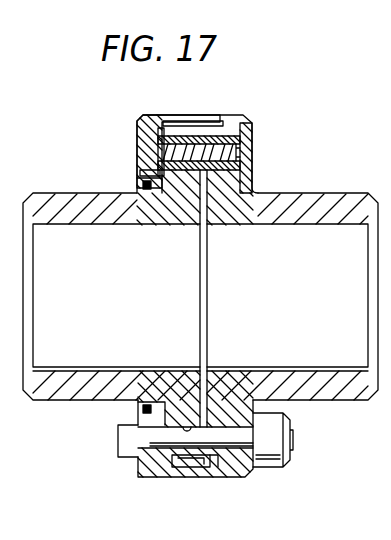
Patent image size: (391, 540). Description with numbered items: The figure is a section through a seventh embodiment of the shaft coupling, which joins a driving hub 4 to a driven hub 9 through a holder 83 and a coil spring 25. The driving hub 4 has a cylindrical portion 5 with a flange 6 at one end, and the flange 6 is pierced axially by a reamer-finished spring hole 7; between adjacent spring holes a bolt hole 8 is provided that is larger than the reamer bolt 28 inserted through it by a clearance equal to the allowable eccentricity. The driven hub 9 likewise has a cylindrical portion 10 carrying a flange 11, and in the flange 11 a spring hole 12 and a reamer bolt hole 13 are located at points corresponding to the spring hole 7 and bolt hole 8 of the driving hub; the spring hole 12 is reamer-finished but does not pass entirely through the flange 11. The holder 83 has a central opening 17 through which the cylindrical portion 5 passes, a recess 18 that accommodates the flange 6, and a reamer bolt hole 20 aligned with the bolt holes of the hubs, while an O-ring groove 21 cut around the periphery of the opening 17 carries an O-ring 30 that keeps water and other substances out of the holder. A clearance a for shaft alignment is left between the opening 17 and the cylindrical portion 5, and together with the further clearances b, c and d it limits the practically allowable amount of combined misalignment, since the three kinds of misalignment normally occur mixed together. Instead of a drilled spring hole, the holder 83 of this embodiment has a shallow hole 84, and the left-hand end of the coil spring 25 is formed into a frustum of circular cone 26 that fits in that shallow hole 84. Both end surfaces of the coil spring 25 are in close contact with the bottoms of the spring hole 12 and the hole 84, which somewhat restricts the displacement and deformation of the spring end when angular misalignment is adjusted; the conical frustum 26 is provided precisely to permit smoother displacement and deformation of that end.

The driving hub 4 is at (77, 191).
The cylindrical portion 5 is at (79, 211).
The flange 6 is at (185, 178).
The spring holes 7 is at (204, 135).
The bolt hole 8 is at (187, 424).
The driven hub 9 is at (320, 192).
The cylindrical portion 10 is at (298, 204).
The flange 11 is at (228, 185).
The spring hole 12 is at (251, 127).
The reamer bolt holes 13 is at (228, 462).
The central opening 17 is at (146, 191).
The recess 18 is at (168, 121).
The reamer bolt holes 20 is at (137, 448).
The O-ring groove 21 is at (152, 193).
The coil spring 25 is at (242, 164).
The frustum of circular cone 26 is at (157, 152).
The reamer bolt 28 is at (249, 456).
The O-ring 30 is at (150, 406).
The holder 83 is at (136, 140).
The shallow hole 84 is at (139, 172).
The clearance a is at (162, 404).
The clearance b is at (185, 468).
The clearance c is at (165, 470).
The clearance d is at (207, 468).